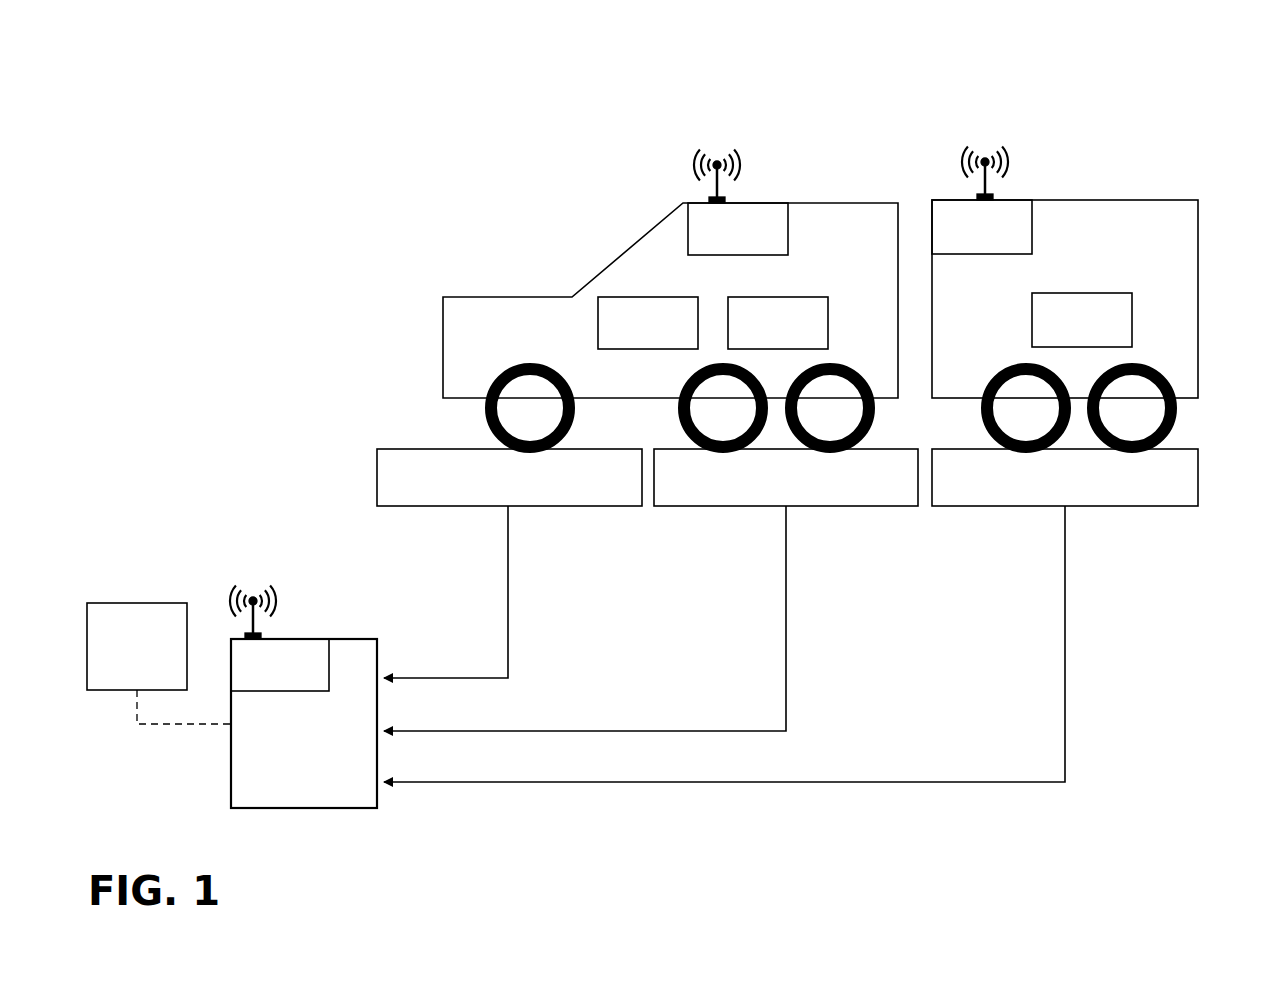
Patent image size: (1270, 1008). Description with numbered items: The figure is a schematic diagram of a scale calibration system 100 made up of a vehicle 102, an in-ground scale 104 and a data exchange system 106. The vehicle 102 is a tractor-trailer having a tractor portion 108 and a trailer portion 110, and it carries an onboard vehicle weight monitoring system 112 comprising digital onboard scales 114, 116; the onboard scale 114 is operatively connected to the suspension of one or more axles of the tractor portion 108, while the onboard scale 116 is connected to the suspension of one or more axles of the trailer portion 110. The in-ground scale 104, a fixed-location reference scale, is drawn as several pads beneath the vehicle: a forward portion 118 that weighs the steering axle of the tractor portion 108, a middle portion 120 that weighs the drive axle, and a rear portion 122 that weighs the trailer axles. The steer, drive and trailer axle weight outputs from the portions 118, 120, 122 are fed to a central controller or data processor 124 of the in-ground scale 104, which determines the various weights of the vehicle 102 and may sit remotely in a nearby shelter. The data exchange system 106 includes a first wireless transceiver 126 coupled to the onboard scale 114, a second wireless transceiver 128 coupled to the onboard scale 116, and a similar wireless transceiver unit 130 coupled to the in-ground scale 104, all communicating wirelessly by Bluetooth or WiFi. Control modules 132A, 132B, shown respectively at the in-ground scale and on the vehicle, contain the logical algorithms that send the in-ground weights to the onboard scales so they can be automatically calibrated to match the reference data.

The scale calibration system 100 is at (112, 318).
The vehicle 102 is at (922, 60).
The in-ground scale 104 is at (640, 828).
The data exchange system 106 is at (784, 148).
The tractor portion 108 is at (463, 346).
The trailer portion 110 is at (1095, 259).
The onboard vehicle weight monitoring system 112 is at (1172, 116).
The onboard scale 114 is at (761, 339).
The onboard scale 116 is at (1065, 337).
The forward portion 118 is at (398, 494).
The middle portion 120 is at (676, 494).
The rear portion 122 is at (953, 494).
The central controller 124 is at (275, 776).
The first wireless transceiver 126 is at (721, 246).
The second wireless transceiver 128 is at (965, 244).
The wireless transceiver unit 130 is at (258, 684).
The control module 132A is at (115, 662).
The control module 132B is at (625, 339).